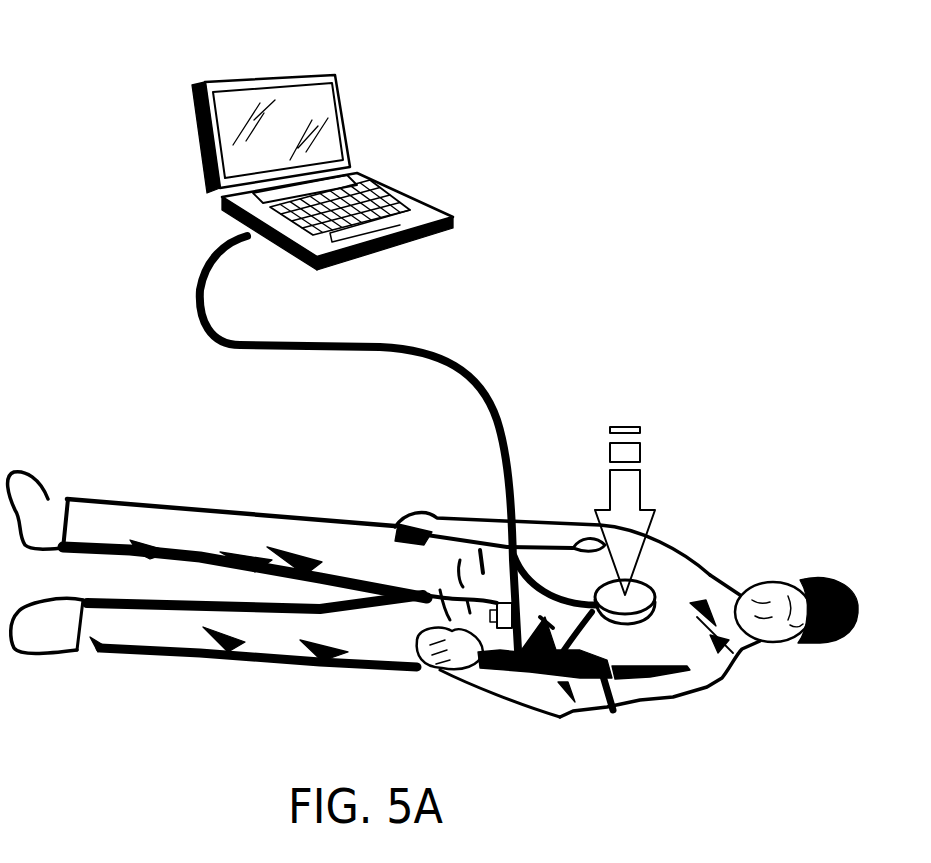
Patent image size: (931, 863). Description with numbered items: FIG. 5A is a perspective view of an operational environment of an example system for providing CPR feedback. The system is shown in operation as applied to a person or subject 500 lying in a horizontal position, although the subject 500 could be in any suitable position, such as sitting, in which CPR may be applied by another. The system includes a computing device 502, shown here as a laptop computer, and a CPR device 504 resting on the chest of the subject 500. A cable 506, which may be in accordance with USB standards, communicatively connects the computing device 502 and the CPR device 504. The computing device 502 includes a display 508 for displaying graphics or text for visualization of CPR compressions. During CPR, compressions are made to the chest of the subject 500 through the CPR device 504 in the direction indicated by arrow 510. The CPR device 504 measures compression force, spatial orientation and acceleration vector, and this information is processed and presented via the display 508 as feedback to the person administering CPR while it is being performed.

The subject 500 is at (720, 682).
The computing device 502 is at (335, 76).
The CPR device 504 is at (643, 593).
The cable 506 is at (223, 340).
The display 508 is at (228, 96).
The arrow 510 is at (610, 481).